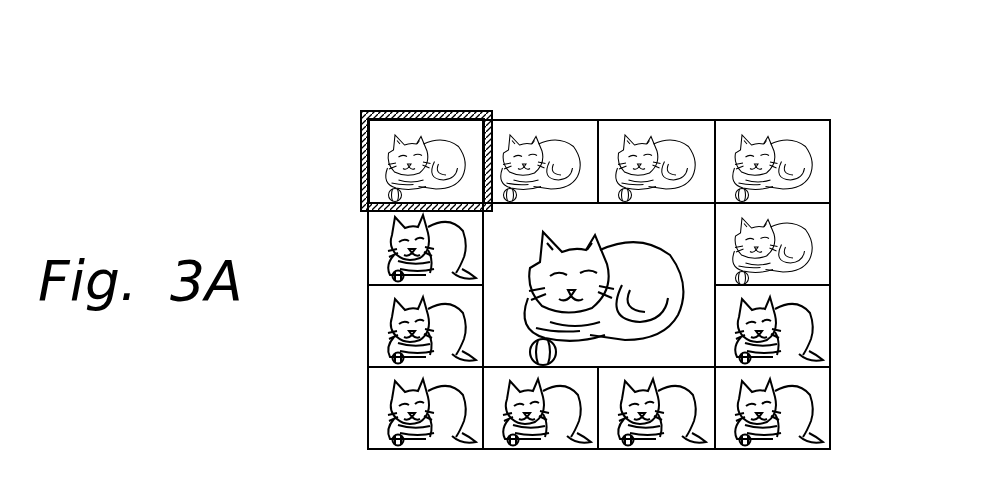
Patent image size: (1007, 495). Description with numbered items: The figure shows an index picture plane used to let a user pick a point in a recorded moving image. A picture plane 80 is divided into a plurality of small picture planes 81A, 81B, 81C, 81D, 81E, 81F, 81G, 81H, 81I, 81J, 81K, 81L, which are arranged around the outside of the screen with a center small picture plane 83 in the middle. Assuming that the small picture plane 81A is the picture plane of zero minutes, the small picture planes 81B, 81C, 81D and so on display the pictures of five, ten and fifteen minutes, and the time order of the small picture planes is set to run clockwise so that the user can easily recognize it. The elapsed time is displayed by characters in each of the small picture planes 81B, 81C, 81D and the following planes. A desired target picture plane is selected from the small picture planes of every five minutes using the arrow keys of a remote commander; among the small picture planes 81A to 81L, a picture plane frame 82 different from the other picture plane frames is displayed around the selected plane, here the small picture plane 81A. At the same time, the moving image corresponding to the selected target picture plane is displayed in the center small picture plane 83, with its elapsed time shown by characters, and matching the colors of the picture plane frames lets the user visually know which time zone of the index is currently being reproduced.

The picture plane 80 is at (830, 87).
The small picture plane 81A is at (432, 120).
The small picture plane 81B is at (540, 120).
The small picture plane 81C is at (655, 120).
The small picture plane 81D is at (770, 120).
The small picture plane 81E is at (822, 248).
The small picture plane 81F is at (822, 333).
The small picture plane 81G is at (822, 415).
The small picture plane 81H is at (657, 444).
The small picture plane 81I is at (542, 444).
The small picture plane 81J is at (372, 408).
The small picture plane 81K is at (372, 329).
The small picture plane 81L is at (372, 247).
The picture plane frame 82 is at (362, 164).
The center small picture plane 83 is at (680, 227).